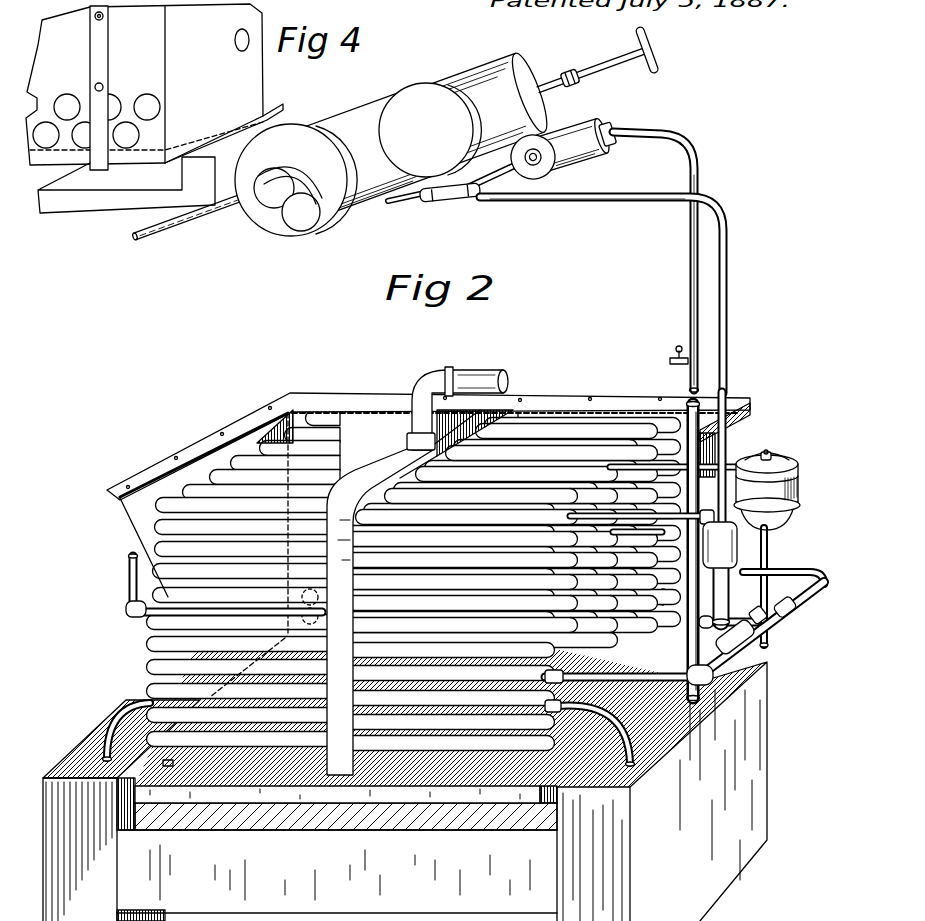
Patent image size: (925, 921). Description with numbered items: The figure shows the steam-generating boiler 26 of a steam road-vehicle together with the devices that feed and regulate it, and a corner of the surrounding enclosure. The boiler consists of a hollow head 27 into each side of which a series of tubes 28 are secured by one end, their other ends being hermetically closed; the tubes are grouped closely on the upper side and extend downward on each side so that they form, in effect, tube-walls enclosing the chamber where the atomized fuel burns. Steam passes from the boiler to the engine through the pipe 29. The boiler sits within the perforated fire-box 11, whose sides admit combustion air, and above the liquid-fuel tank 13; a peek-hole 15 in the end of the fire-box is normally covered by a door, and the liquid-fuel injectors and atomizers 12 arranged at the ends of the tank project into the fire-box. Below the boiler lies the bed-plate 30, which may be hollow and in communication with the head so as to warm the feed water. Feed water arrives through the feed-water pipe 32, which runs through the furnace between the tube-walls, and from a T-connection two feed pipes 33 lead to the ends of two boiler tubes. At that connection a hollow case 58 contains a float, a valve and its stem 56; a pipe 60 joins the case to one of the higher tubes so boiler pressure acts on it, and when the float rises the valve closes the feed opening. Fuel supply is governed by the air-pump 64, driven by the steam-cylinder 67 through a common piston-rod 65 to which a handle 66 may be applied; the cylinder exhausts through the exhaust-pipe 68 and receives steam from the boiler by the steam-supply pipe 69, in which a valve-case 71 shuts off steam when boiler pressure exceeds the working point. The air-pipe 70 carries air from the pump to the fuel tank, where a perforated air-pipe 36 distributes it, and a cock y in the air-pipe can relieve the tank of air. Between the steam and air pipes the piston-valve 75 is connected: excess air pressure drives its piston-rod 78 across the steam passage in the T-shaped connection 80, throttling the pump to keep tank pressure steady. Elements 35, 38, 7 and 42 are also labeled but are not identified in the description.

In FIG. 4, the fire-box 11 is at (144, 84).
In FIG. 2, the fire-box 11 is at (124, 528).
In FIG. 4, the guide bar 35 is at (104, 47).
In FIG. 4, the peek-hole 15 is at (234, 46).
In FIG. 4, the liquid-fuel tank 13 is at (160, 158).
In FIG. 2, the liquid-fuel tank 13 is at (449, 840).
In FIG. 4, the exhaust-pipe 68 is at (167, 238).
In FIG. 4, the steam-cylinder 67 is at (336, 163).
In FIG. 4, the air-pump 64 is at (466, 113).
In FIG. 4, the piston-rod 65 is at (557, 80).
In FIG. 4, the handle 66 is at (618, 58).
In FIG. 4, the piston-rod 78 is at (489, 150).
In FIG. 4, the T-shaped connection 80 is at (452, 201).
In FIG. 4, the piston-valve 75 is at (563, 147).
In FIG. 4, the air-pipe 70 is at (676, 160).
In FIG. 4, the steam-supply pipe 69 is at (602, 204).
In FIG. 2, the steam pipe 29 is at (410, 426).
In FIG. 2, the boiler tubes 28 is at (172, 500).
In FIG. 2, the feed-water pipe 32 is at (130, 582).
In FIG. 2, the hollow head 27 is at (380, 611).
In FIG. 2, the steam-generating boiler 26 is at (385, 579).
In FIG. 2, the liquid-fuel injectors and atomizers 12 is at (122, 732).
In FIG. 2, the bed-plate 30 is at (346, 796).
In FIG. 2, the air-pipe 36 is at (686, 407).
In FIG. 2, the pipe 60 is at (740, 462).
In FIG. 2, the hollow case 58 is at (797, 487).
In FIG. 2, the valve stem 56 is at (773, 544).
In FIG. 2, the pipe 38 is at (787, 580).
In FIG. 2, the feed pipes 33 is at (562, 670).
In FIG. 2, the valve-case 71 is at (653, 508).
In FIG. 2, the cross pipe 7 is at (653, 541).
In FIG. 2, the curved pipe 42 is at (644, 731).
In FIG. 2, the cock y is at (670, 366).